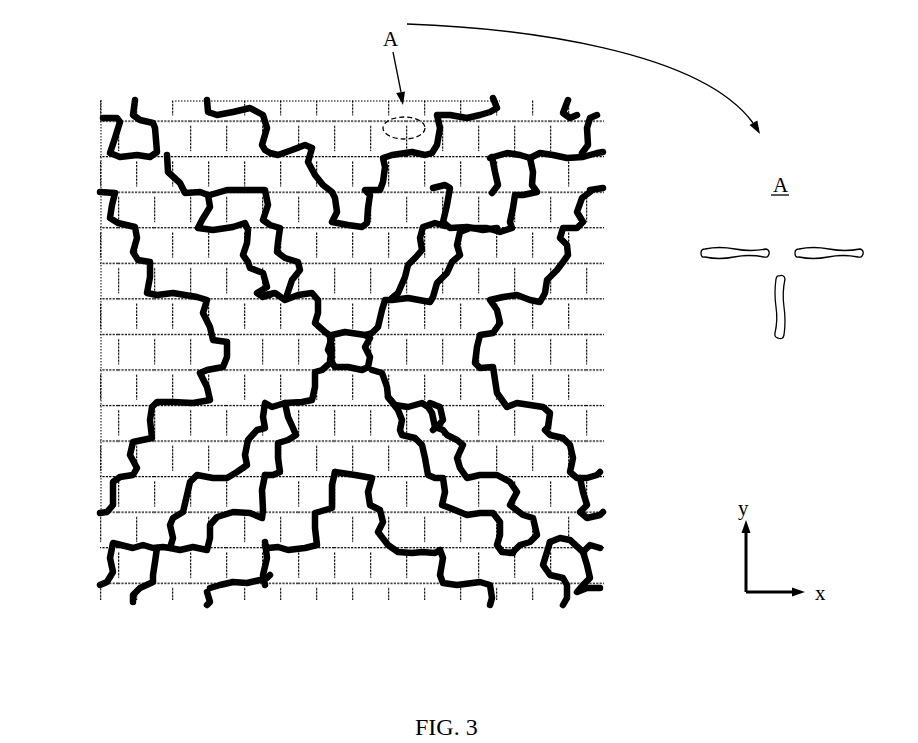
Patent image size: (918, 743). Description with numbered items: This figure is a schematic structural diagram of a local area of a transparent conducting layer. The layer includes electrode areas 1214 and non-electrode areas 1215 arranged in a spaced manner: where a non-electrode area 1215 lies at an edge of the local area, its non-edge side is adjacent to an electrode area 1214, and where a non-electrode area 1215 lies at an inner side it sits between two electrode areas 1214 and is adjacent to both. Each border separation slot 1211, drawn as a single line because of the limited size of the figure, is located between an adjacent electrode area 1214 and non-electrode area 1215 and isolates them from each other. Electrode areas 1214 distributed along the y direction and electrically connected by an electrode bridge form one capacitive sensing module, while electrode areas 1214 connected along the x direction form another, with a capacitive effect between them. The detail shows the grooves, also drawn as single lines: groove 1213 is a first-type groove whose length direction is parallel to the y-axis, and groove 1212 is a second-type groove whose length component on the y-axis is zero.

The border separation slot 1211 is at (232, 88).
The groove 1212 is at (752, 244).
The groove 1213 is at (799, 308).
The electrode area 1214 is at (329, 236).
The non-electrode area 1215 is at (347, 127).